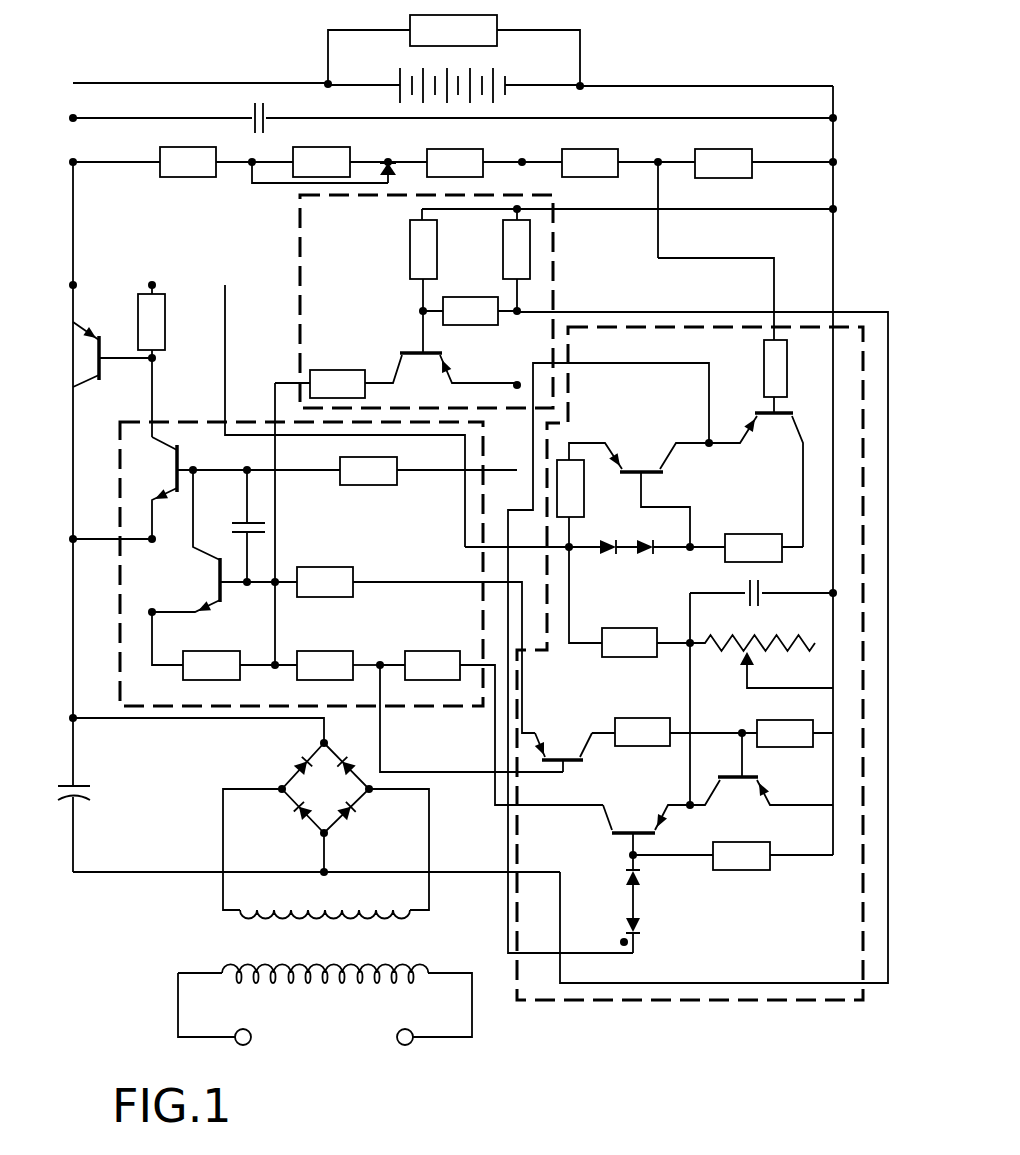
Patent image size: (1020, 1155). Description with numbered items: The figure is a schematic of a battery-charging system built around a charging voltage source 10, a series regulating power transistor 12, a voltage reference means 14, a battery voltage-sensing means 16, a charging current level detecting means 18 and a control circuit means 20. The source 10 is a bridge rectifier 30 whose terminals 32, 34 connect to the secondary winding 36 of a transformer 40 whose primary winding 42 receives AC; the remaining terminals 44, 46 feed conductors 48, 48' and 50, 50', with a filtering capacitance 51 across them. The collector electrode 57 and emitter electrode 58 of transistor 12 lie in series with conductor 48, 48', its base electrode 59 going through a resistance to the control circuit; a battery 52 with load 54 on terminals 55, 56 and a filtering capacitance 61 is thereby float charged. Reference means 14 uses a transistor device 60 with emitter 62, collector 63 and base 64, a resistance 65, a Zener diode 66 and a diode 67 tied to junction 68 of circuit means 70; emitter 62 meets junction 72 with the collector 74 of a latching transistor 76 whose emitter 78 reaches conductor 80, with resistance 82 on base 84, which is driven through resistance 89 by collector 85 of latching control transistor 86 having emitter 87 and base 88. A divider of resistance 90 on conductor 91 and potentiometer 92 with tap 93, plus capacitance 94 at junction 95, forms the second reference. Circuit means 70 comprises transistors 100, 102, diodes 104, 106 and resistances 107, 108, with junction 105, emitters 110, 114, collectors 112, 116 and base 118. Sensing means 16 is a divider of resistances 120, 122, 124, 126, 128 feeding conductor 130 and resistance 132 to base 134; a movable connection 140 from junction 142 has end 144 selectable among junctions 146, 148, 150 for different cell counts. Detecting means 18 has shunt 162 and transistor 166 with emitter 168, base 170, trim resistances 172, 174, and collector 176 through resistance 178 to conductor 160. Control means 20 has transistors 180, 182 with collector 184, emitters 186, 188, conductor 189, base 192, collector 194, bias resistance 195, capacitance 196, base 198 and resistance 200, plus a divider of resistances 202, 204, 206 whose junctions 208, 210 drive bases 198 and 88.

The charging voltage source 10 is at (190, 803).
The series regulating power transistor 12 is at (82, 352).
The voltage reference means 14 is at (700, 1005).
The battery voltage-sensing means 16 is at (192, 210).
The charging current level detecting means 18 is at (297, 284).
The control circuit means 20 is at (203, 708).
The bridge rectifier 30 is at (330, 788).
The rectifier terminal 32 is at (290, 781).
The rectifier terminal 34 is at (372, 792).
The secondary winding 36 is at (348, 921).
The transformer 40 is at (230, 932).
The primary winding 42 is at (285, 963).
The rectifier terminal 44 is at (321, 742).
The rectifier terminal 46 is at (320, 835).
The positive conductor 48 is at (54, 576).
The positive conductor 48' is at (54, 223).
The negative conductor 50 is at (717, 647).
The negative conductor 50' is at (629, 224).
The filtering capacitance 51 is at (63, 795).
The battery 52 is at (398, 82).
The load 54 is at (500, 28).
The battery terminal 55 is at (325, 82).
The battery terminal 56 is at (584, 86).
The collector electrode 57 is at (92, 385).
The emitter electrode 58 is at (87, 325).
The base electrode 59 is at (141, 360).
The transistor device 60 is at (633, 824).
The filtering capacitance 61 is at (253, 115).
The emitter electrode 62 is at (664, 820).
The collector electrode 63 is at (605, 815).
The base electrode 64 is at (628, 845).
The resistance 65 is at (745, 870).
The Zener diode device 66 is at (628, 925).
The diode device 67 is at (628, 878).
The junction 68 is at (712, 448).
The circuit means 70 is at (700, 513).
The junction 72 is at (692, 808).
The collector electrode 74 is at (722, 797).
The latching transistor switch means 76 is at (738, 800).
The emitter electrode 78 is at (772, 797).
The conductor 80 is at (834, 496).
The resistance 82 is at (800, 722).
The base electrode 84 is at (740, 759).
The collector electrode 85 is at (590, 750).
The latching control transistor 86 is at (560, 746).
The emitter electrode 87 is at (542, 732).
The base electrode 88 is at (562, 775).
The resistance 89 is at (655, 720).
The resistance 90 is at (632, 650).
The conductor 91 is at (463, 525).
The potentiometer 92 is at (735, 653).
The movable tap 93 is at (756, 664).
The capacitance 94 is at (750, 590).
The junction 95 is at (686, 649).
The transistor device 100 is at (771, 456).
The transistor device 102 is at (650, 458).
The diode 104 is at (606, 556).
The junction 105 is at (576, 545).
The diode 106 is at (646, 556).
The resistance 107 is at (584, 487).
The resistance 108 is at (750, 536).
The emitter electrode 110 is at (748, 428).
The collector electrode 112 is at (672, 458).
The emitter electrode 114 is at (625, 450).
The collector electrode 116 is at (800, 436).
The base electrode 118 is at (645, 486).
The resistance 120 is at (190, 172).
The resistance 122 is at (330, 152).
The resistance 124 is at (460, 152).
The resistance 126 is at (595, 152).
The resistance 128 is at (728, 152).
The conductor 130 is at (655, 252).
The resistance 132 is at (787, 361).
The base electrode 134 is at (780, 410).
The movable connection 140 is at (290, 186).
The junction 142 is at (250, 166).
The end 144 is at (383, 178).
The junction 146 is at (387, 158).
The junction 148 is at (521, 158).
The junction 150 is at (657, 158).
The conductor 160 is at (275, 395).
The shunt 162 is at (502, 250).
The transistor 166 is at (420, 366).
The emitter electrode 168 is at (455, 375).
The base electrode 170 is at (421, 336).
The resistance 172 is at (470, 296).
The resistance 174 is at (409, 250).
The collector electrode 176 is at (393, 368).
The resistance 178 is at (337, 368).
The first control transistor 180 is at (172, 468).
The second control transistor 182 is at (215, 582).
The collector electrode 184 is at (172, 444).
The emitter electrode 186 is at (160, 490).
The emitter electrode 188 is at (200, 606).
The conductor 189 is at (105, 538).
The base electrode 192 is at (195, 468).
The collector electrode 194 is at (206, 551).
The bias resistance 195 is at (372, 477).
The capacitance 196 is at (240, 522).
The base electrode 198 is at (228, 588).
The resistance 200 is at (330, 566).
The resistance 202 is at (228, 655).
The resistance 204 is at (320, 655).
The resistance 206 is at (435, 655).
The junction 208 is at (275, 668).
The junction 210 is at (381, 655).